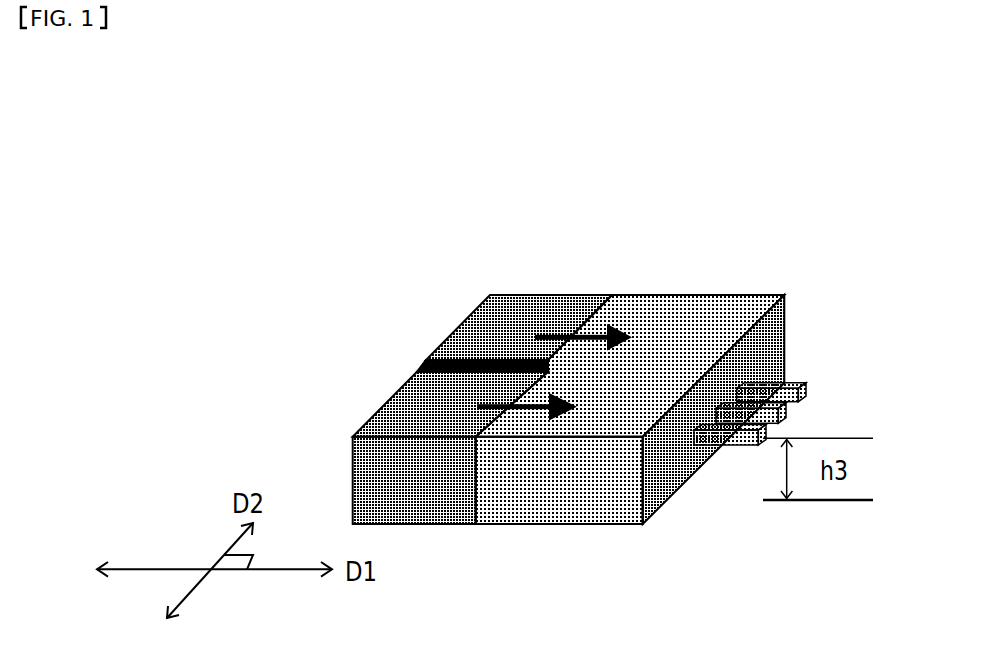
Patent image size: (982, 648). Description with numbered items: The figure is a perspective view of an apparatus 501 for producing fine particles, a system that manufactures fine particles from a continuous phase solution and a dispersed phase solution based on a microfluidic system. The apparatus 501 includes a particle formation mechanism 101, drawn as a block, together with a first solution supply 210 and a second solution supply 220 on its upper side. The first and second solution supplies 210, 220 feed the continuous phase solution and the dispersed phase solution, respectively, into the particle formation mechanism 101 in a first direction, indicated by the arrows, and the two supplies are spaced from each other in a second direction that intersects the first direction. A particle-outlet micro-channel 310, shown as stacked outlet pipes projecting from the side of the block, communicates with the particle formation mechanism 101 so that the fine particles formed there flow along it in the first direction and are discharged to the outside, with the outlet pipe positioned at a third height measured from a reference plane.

The apparatus for producing fine particles 501 is at (344, 169).
The particle formation mechanism 101 is at (708, 281).
The first solution supply 210 is at (457, 328).
The second solution supply 220 is at (402, 412).
The particle-outlet micro-channel 310 is at (812, 360).